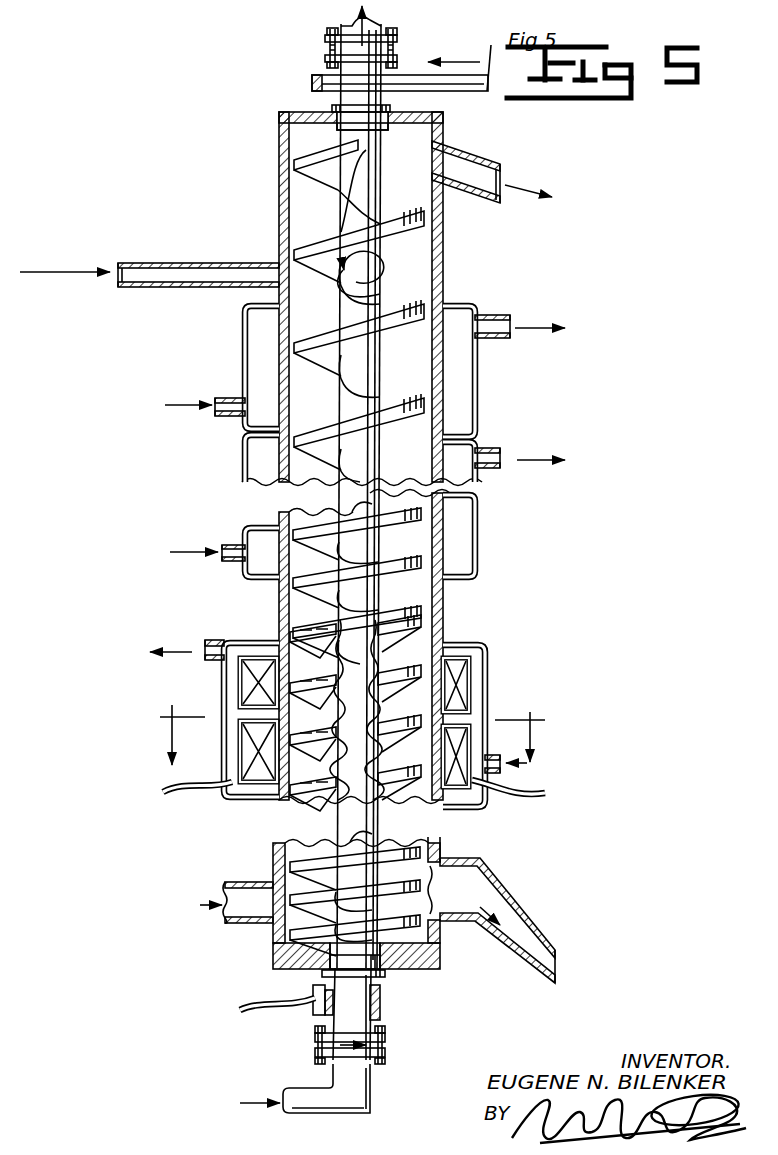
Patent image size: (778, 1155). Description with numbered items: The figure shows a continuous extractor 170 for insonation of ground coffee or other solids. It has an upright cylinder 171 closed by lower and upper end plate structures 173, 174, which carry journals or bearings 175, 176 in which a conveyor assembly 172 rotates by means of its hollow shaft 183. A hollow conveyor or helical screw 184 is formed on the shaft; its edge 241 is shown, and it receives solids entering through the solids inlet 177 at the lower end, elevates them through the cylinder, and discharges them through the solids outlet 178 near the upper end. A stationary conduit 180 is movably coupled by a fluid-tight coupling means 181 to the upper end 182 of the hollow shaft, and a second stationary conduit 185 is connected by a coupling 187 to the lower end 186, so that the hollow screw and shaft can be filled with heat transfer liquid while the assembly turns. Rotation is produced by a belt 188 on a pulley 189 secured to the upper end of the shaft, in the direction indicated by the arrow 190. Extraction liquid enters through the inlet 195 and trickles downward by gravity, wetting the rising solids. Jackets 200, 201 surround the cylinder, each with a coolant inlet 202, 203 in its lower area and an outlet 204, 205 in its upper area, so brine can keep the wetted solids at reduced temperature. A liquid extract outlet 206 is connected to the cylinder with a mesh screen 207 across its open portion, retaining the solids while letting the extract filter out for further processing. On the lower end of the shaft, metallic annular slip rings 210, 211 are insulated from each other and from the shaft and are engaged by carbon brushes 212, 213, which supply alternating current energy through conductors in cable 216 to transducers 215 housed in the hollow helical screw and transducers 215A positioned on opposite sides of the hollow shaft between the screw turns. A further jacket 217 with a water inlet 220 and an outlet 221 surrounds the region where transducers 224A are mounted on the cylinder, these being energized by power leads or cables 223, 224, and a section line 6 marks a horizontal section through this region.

The section line 6- 6 is at (347, 735).
The extractor 170 is at (273, 200).
The cylinder 171 is at (442, 858).
The conveyor assembly 172 is at (310, 245).
The end plate structure 173 is at (273, 966).
The end plate structure 174 is at (290, 112).
The journal or bearing 175 is at (355, 960).
The journal or bearing 176 is at (342, 139).
The solids inlet 177 is at (232, 882).
The solids outlet 178 is at (498, 170).
The stationary conduit 180 is at (380, 18).
The coupling means 181 is at (396, 42).
The upper end 182 is at (390, 104).
The hollow shaft 183 is at (379, 180).
The hollow conveyor or helical screw 184 is at (297, 342).
The second stationary conduit 185 is at (374, 1114).
The lower end 186 is at (316, 1037).
The coupling 187 is at (386, 1044).
The belt 188 is at (491, 55).
The pulley 189 is at (316, 75).
The arrow 190 is at (466, 68).
The inlet 195 is at (130, 288).
The jacket 200 is at (242, 352).
The jacket 201 is at (242, 465).
The inlet 202 is at (226, 416).
The inlet 203 is at (226, 561).
The outlet 204 is at (502, 314).
The outlet 205 is at (498, 448).
The liquid extract outlet 206 is at (528, 930).
The mesh screen 207 is at (440, 918).
The metallic annular ring 210 is at (380, 990).
The metallic annular ring 211 is at (374, 1030).
The brush 212 is at (326, 977).
The brush 213 is at (320, 1016).
The transducer 215 is at (312, 650).
The transducer 215A is at (342, 705).
The cable 216 is at (240, 1012).
The jacket 217 is at (223, 745).
The inlet 220 is at (496, 755).
The outlet 221 is at (212, 640).
The power lead or cable 223 is at (208, 794).
The power lead or cable 224 is at (492, 796).
The transducer 224A is at (250, 680).
The edge of the helical screw 241 is at (330, 628).